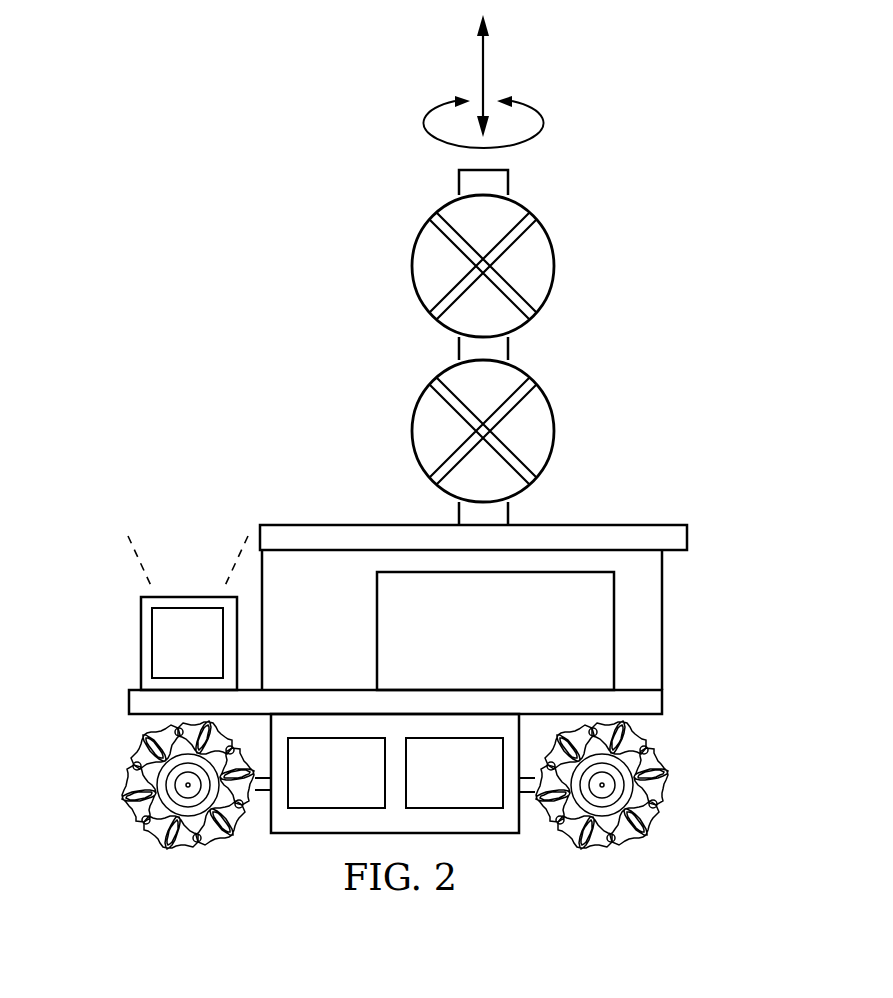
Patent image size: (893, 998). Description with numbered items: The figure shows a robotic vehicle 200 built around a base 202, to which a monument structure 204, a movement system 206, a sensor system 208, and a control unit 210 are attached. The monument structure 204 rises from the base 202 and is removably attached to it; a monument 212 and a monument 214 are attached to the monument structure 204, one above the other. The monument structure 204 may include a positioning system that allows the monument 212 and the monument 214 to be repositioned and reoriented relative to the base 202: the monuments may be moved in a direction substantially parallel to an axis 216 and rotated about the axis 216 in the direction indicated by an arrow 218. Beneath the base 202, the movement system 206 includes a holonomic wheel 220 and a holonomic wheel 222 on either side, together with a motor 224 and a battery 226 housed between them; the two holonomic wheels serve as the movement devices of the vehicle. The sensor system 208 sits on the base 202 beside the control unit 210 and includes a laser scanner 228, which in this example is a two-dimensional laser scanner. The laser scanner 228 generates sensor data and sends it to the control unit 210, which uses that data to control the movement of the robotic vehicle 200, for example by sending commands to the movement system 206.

The robotic vehicle 200 is at (312, 166).
The base 202 is at (675, 661).
The monument structure 204 is at (508, 345).
The movement system 206 is at (294, 853).
The sensor system 208 is at (130, 624).
The control unit 210 is at (377, 630).
The monument 212 is at (556, 270).
The monument 214 is at (556, 432).
The axis 216 is at (485, 77).
The arrow 218 is at (543, 122).
The holonomic wheel 220 is at (123, 785).
The holonomic wheel 222 is at (672, 785).
The motor 224 is at (314, 790).
The battery 226 is at (433, 790).
The laser scanner 228 is at (166, 661).